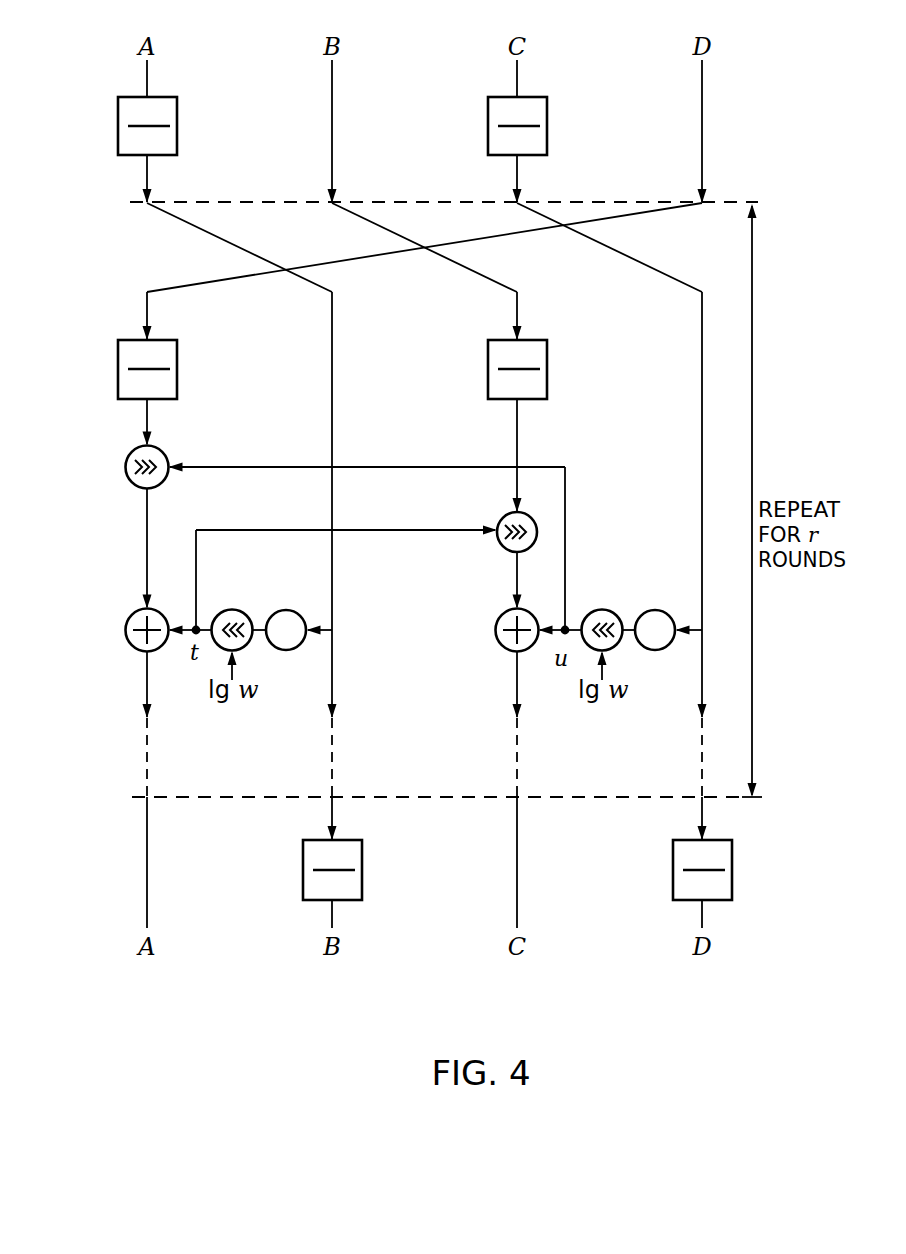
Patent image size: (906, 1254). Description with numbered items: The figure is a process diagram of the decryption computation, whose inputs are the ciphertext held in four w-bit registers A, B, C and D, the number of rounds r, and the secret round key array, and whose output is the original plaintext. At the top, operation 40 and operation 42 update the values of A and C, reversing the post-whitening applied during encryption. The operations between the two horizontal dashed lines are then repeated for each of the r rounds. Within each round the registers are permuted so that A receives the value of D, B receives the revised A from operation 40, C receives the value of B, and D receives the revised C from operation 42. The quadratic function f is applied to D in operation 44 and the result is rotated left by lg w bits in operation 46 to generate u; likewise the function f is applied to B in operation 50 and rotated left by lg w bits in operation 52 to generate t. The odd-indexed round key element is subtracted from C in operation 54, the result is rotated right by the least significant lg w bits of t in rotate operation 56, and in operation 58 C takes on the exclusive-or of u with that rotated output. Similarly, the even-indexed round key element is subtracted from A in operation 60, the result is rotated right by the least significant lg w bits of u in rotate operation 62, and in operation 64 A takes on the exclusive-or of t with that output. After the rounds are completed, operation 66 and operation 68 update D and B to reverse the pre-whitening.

The operation 40 is at (118, 125).
The operation 42 is at (488, 125).
The operation 44 is at (656, 610).
The operation 46 is at (603, 610).
The operation 50 is at (287, 610).
The operation 52 is at (233, 610).
The operation 54 is at (489, 365).
The rotate operation 56 is at (499, 518).
The operation 58 is at (496, 632).
The operation 60 is at (118, 365).
The rotate operation 62 is at (125, 467).
The operation 64 is at (125, 632).
The operation 66 is at (673, 870).
The operation 68 is at (303, 870).